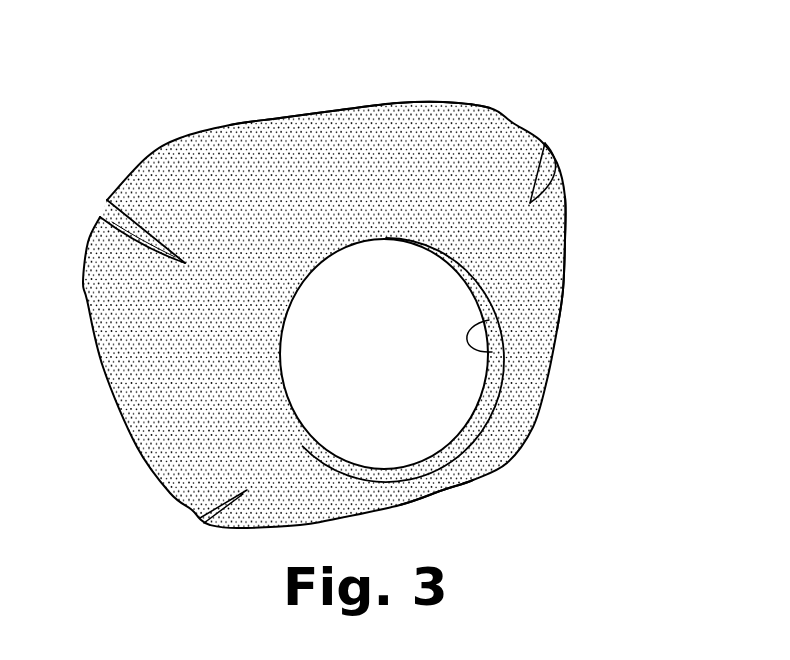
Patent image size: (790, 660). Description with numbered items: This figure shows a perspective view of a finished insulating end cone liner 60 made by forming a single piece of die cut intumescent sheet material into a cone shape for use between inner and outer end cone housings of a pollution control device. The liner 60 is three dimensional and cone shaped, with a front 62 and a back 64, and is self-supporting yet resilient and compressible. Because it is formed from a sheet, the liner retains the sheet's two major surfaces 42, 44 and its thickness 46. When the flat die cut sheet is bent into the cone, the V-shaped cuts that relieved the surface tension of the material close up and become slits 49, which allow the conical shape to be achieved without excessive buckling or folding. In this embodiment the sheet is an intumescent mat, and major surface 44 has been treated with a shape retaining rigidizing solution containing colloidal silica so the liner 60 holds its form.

The insulating end cone liner 60 is at (497, 104).
The front 62 is at (374, 104).
The slits 49 is at (547, 157).
The major surface 42 is at (550, 250).
The major surface 44 is at (493, 352).
The thickness 46 is at (493, 412).
The back 64 is at (443, 485).